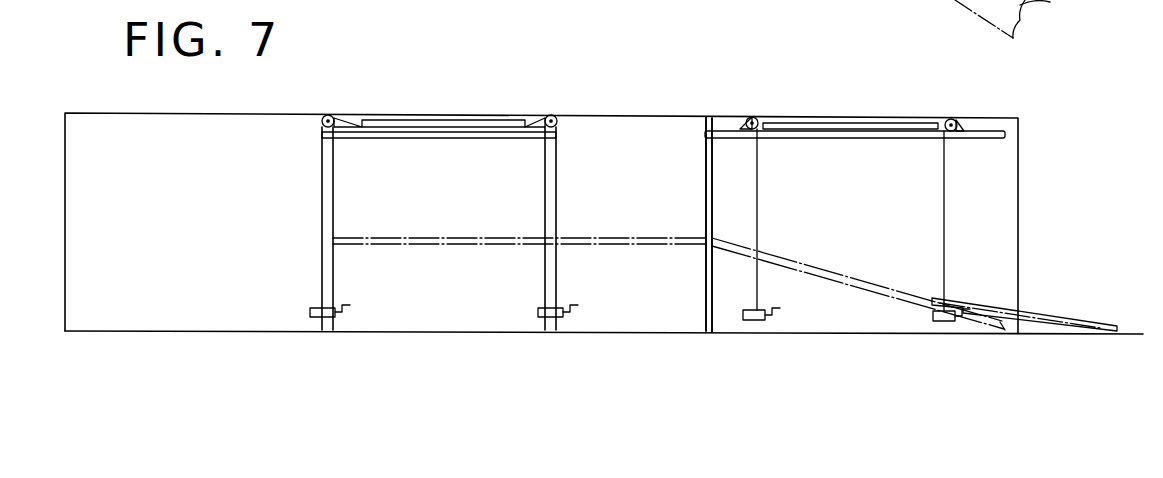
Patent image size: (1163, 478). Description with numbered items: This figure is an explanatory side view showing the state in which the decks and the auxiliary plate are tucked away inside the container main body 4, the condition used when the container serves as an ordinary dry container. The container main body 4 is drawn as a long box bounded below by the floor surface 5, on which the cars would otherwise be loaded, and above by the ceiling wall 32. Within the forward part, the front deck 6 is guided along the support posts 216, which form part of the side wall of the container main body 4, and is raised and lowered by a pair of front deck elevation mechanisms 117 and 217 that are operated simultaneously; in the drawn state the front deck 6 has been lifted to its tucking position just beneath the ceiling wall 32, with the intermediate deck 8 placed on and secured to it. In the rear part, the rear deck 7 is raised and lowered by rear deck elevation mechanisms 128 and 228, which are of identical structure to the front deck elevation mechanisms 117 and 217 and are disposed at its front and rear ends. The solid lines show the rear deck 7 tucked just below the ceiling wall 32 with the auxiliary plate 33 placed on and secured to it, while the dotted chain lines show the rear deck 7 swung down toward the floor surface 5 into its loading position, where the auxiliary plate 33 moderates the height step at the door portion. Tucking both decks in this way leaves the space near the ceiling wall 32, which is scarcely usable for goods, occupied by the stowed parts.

The container main body 4 is at (231, 109).
The floor surface 5 is at (617, 333).
The front deck 6 is at (394, 138).
The rear deck 7 is at (866, 140).
The intermediate deck 8 is at (503, 120).
The ceiling wall 32 is at (641, 116).
The auxiliary plate 33 is at (832, 122).
The front deck elevation mechanism 117 is at (312, 308).
The rear deck elevation mechanism 128 is at (757, 322).
The support post 216 is at (336, 190).
The front deck elevation mechanism 217 is at (538, 313).
The rear deck elevation mechanism 228 is at (944, 322).